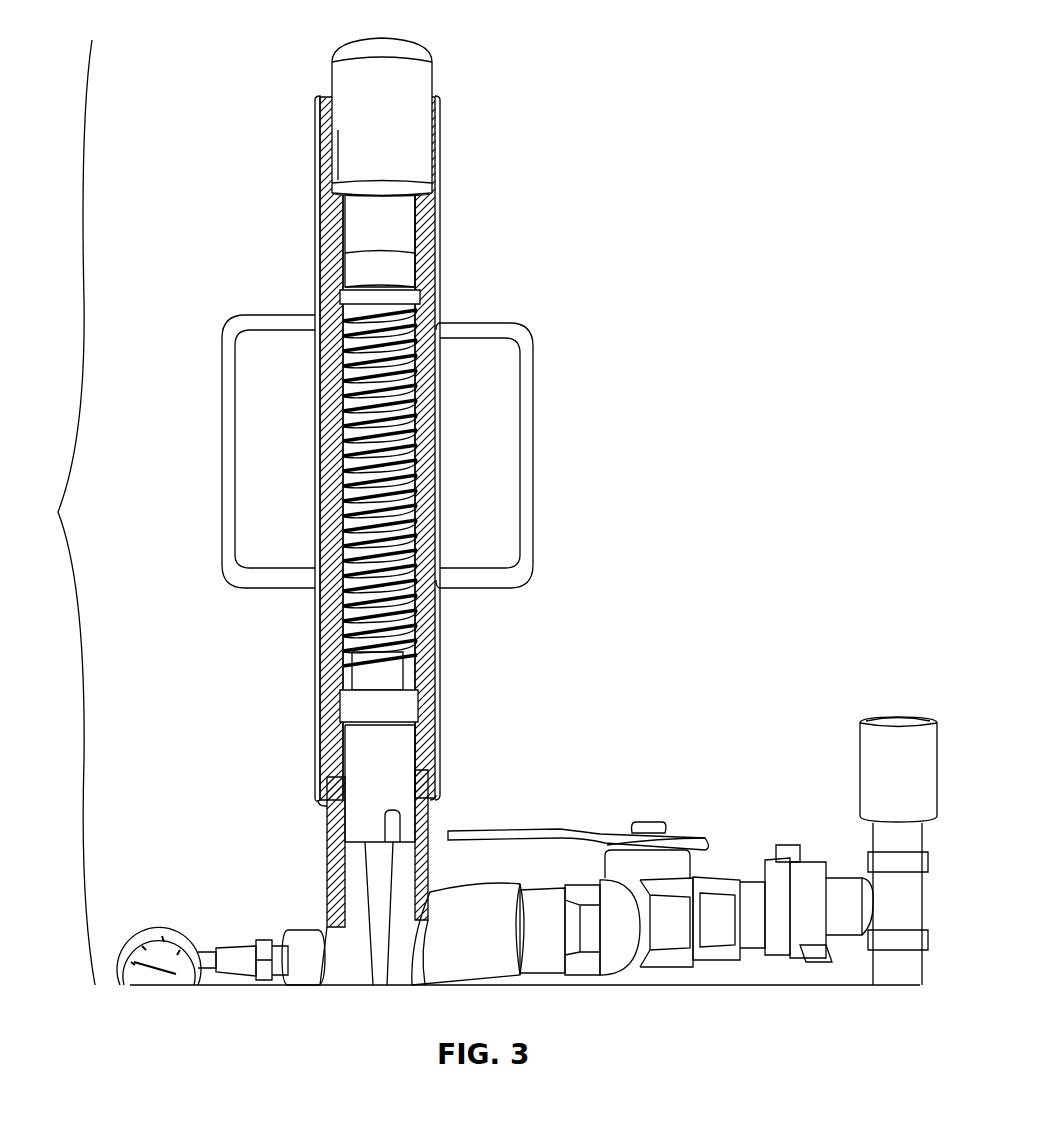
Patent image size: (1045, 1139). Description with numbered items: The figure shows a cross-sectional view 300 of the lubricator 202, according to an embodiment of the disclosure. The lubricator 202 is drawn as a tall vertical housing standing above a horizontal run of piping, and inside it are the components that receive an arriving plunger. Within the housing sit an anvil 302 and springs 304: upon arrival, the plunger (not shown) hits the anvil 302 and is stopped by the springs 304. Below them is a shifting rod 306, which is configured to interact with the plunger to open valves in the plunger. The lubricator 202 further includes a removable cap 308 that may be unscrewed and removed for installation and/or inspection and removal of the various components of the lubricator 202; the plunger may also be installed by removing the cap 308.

The lubricator 202 is at (56, 512).
The cross-sectional view 300 is at (778, 54).
The anvil 302 is at (363, 806).
The springs 304 is at (424, 430).
The shifting rod 306 is at (365, 920).
The removable cap 308 is at (437, 730).